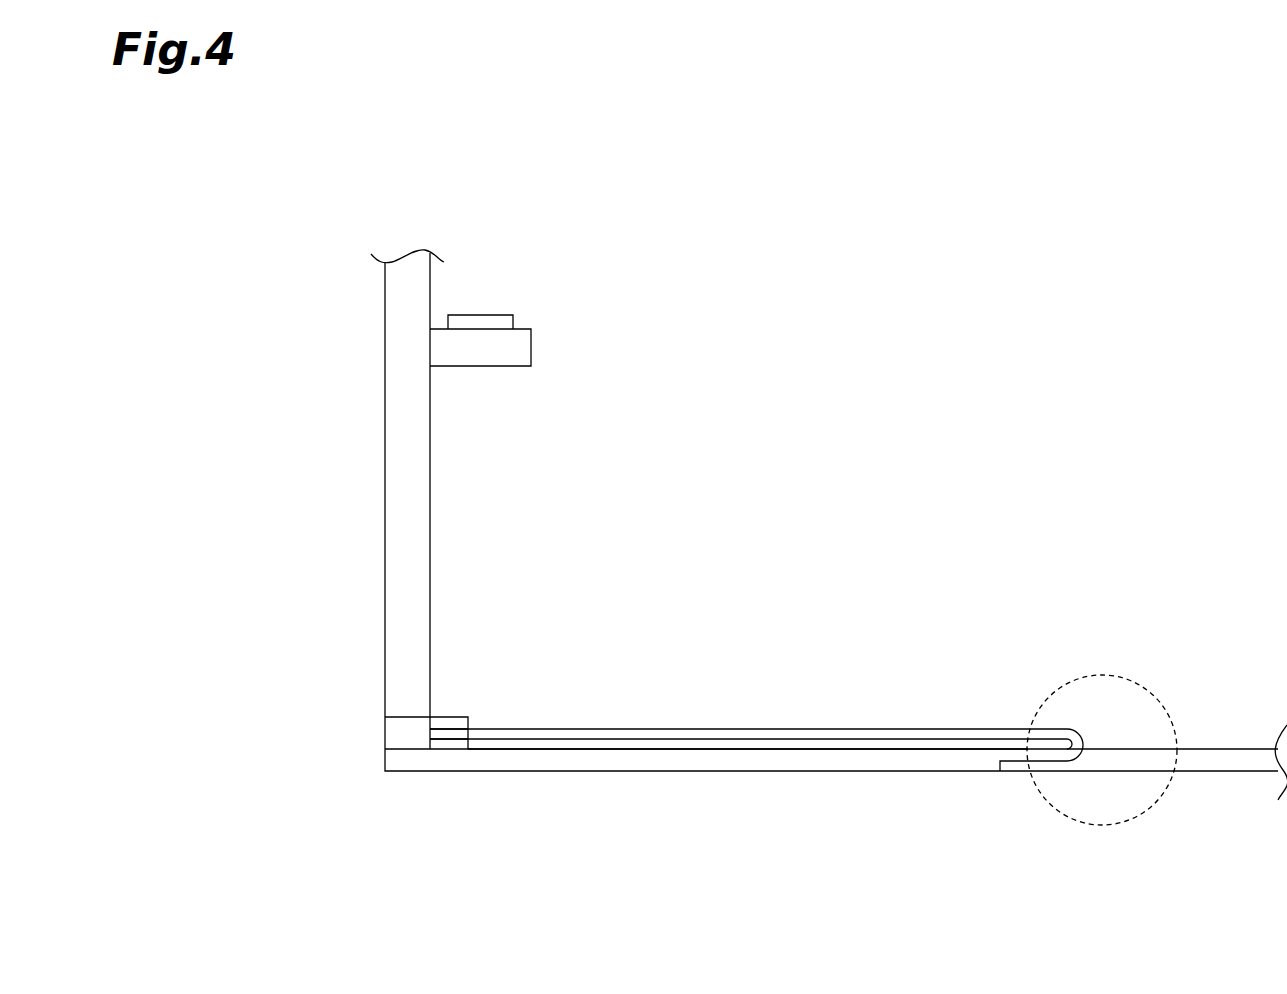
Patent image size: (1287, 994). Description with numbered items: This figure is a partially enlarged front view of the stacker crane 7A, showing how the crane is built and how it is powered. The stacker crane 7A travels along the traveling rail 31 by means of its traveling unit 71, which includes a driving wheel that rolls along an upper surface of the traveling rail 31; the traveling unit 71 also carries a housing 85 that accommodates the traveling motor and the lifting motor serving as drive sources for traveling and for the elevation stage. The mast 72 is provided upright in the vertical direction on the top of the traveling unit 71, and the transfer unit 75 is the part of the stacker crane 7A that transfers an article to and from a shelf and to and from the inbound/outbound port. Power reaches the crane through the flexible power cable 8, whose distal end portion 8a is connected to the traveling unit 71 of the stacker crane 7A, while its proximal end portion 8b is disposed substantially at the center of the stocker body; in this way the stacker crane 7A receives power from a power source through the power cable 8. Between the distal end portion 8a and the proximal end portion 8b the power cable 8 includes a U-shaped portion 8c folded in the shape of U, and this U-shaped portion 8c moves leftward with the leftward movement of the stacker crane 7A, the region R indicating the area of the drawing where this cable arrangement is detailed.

The stacker crane 7A is at (357, 262).
The mast 72 is at (400, 484).
The transfer unit 75 is at (544, 333).
The traveling unit 71 is at (406, 713).
The housing 85 is at (397, 731).
The power cable 8 is at (683, 728).
The traveling rail 31 is at (777, 748).
The distal end portion 8a is at (428, 733).
The proximal end portion 8b is at (995, 768).
The U-shaped portion 8c is at (1085, 742).
The region R is at (1127, 823).